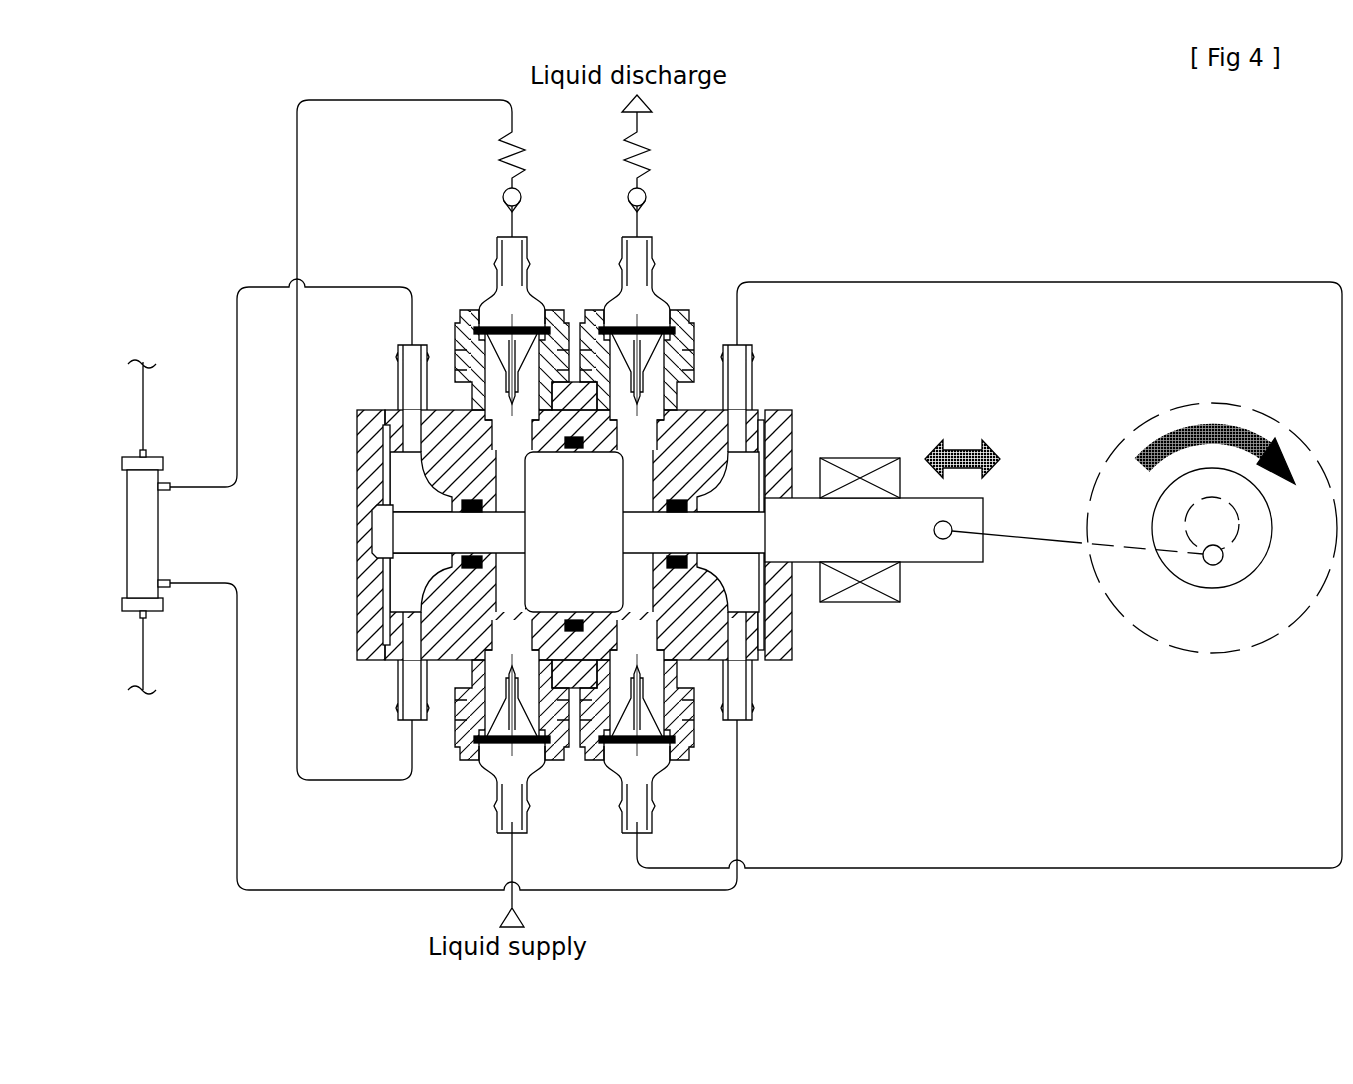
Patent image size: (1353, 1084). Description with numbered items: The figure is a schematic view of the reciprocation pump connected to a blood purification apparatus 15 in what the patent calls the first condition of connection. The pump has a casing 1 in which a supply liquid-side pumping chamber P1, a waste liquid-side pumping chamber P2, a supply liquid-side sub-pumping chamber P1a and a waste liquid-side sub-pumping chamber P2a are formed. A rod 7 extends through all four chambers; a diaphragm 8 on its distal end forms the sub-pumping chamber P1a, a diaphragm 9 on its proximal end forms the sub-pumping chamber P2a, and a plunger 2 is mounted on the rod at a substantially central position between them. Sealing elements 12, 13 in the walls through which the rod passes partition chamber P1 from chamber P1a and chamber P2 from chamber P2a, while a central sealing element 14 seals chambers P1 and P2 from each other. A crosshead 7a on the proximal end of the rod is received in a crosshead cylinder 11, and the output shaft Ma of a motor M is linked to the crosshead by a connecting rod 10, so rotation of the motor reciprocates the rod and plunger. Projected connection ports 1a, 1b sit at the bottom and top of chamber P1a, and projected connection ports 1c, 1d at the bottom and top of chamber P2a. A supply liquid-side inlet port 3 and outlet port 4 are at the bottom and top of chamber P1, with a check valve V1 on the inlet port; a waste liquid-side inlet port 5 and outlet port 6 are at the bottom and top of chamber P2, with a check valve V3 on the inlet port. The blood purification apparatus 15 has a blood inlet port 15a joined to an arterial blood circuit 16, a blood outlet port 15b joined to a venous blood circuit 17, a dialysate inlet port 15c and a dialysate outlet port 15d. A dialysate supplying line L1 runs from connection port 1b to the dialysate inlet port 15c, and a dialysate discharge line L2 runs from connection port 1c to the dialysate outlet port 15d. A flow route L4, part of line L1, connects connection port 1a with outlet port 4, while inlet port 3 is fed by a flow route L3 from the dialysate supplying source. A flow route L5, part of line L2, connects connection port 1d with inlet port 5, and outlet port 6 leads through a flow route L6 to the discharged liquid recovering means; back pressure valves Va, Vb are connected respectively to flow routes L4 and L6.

The casing 1 is at (357, 418).
The projected connection port 1a is at (398, 690).
The projected connection port 1b is at (398, 385).
The projected connection port 1c is at (752, 692).
The projected connection port 1d is at (752, 378).
The plunger 2 is at (535, 598).
The supply liquid-side inlet port 3 is at (498, 783).
The supply liquid-side outlet port 4 is at (498, 271).
The waste liquid-side inlet port 5 is at (652, 802).
The waste liquid-side outlet port 6 is at (652, 262).
The rod 7 is at (383, 530).
The crosshead 7a is at (976, 565).
The diaphragm 8 is at (365, 470).
The diaphragm 9 is at (770, 437).
The connecting rod 10 is at (1062, 545).
The crosshead cylinder 11 is at (872, 458).
The sealing element 12 is at (462, 560).
The sealing element 13 is at (687, 562).
The central sealing element 14 is at (577, 633).
The blood purification apparatus 15 is at (127, 519).
The blood inlet port 15a is at (141, 613).
The blood outlet port 15b is at (140, 454).
The dialysate inlet port 15c is at (170, 490).
The dialysate outlet port 15d is at (170, 582).
The arterial blood circuit 16 is at (143, 672).
The venous blood circuit 17 is at (143, 378).
The dialysate supplying line L1 is at (237, 336).
The dialysate discharge line L2 is at (237, 838).
The flow route L3 is at (512, 850).
The flow route L4 is at (297, 238).
The flow route L5 is at (987, 282).
The flow route L6 is at (640, 126).
The check valve V1 is at (506, 735).
The check valve V3 is at (642, 735).
The back pressure valve Va is at (503, 196).
The back pressure valve Vb is at (647, 198).
The motor M is at (1230, 404).
The output shaft Ma is at (1152, 500).
The supply liquid-side pumping chamber P1 is at (527, 502).
The supply liquid-side sub-pumping chamber P1a is at (437, 502).
The waste liquid-side pumping chamber P2 is at (657, 502).
The waste liquid-side sub-pumping chamber P2a is at (762, 502).